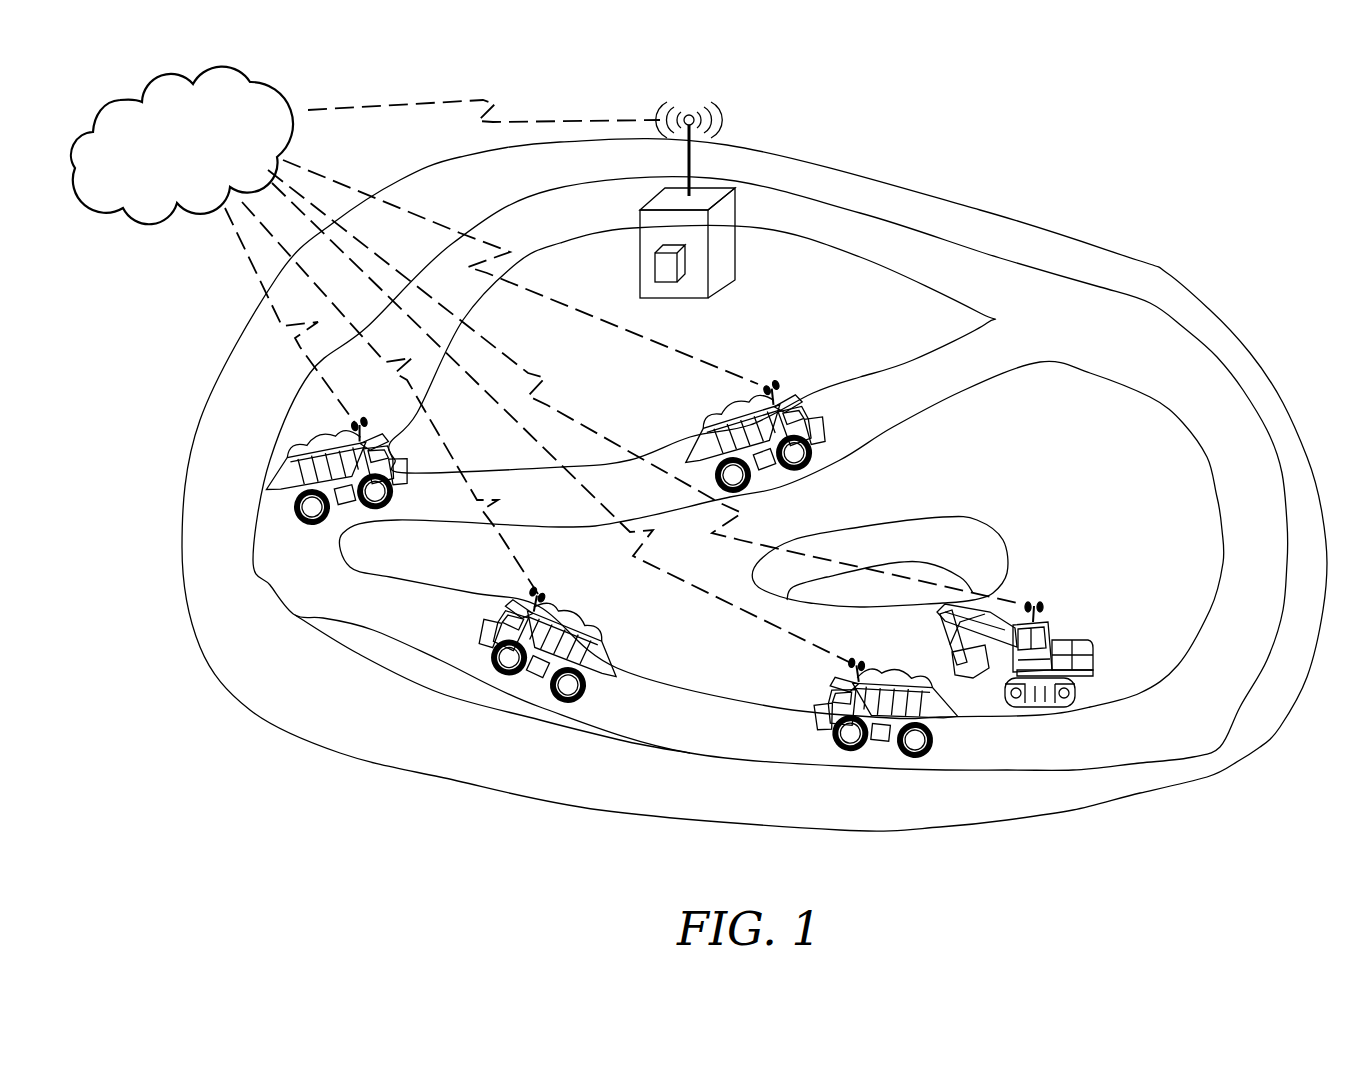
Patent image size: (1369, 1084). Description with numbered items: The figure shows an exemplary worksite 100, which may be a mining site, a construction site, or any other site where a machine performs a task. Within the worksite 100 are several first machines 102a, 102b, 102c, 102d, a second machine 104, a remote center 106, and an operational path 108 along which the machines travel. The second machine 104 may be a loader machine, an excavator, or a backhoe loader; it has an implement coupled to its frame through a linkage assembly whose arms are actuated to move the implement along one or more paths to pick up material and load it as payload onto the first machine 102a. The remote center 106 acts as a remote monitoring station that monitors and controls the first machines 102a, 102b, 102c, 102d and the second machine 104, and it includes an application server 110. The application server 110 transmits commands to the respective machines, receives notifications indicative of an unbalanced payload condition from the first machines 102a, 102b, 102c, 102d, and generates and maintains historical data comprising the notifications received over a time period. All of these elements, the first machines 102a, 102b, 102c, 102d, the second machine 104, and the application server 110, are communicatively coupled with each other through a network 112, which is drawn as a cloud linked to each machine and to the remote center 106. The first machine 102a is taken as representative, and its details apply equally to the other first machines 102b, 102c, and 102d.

The worksite 100 is at (1236, 192).
The first machine 102a is at (592, 650).
The first machine 102b is at (300, 443).
The first machine 102c is at (738, 408).
The first machine 102d is at (828, 693).
The second machine 104 is at (1088, 647).
The remote center 106 is at (727, 202).
The operational path 108 is at (407, 610).
The application server 110 is at (670, 257).
The network 112 is at (207, 163).